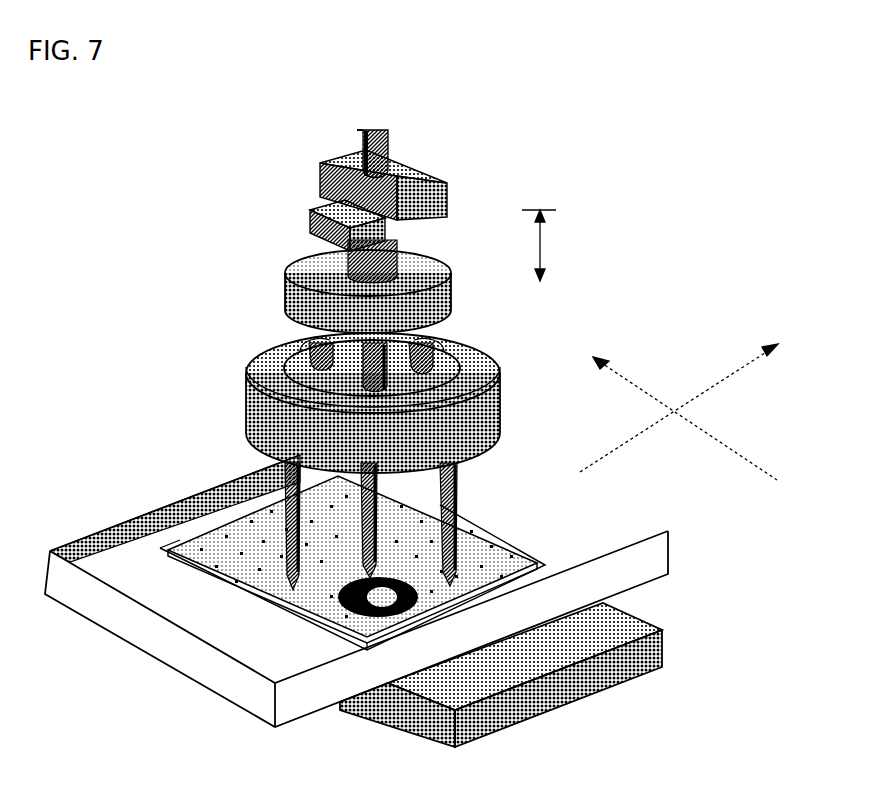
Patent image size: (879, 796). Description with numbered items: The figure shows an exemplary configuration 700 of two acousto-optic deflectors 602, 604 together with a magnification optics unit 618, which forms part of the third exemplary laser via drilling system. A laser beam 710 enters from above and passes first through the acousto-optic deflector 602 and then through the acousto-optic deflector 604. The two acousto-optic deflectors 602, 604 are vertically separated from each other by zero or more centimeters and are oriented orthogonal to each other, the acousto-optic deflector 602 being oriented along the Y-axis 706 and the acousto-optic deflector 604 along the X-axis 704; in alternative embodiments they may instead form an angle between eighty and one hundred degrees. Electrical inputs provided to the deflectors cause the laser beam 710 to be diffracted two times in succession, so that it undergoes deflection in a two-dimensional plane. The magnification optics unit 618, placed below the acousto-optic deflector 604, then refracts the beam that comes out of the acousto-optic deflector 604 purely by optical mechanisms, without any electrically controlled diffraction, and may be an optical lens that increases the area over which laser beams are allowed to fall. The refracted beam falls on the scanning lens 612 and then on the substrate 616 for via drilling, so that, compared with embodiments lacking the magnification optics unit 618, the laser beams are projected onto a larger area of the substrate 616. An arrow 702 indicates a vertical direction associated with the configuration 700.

The exemplary configuration 700 is at (410, 65).
The vertical motion direction 702 is at (541, 254).
The X-axis 704 is at (710, 386).
The Y-axis 706 is at (633, 387).
The laser beam 710 is at (388, 161).
The acousto-optic deflector 602 is at (320, 176).
The acousto-optic deflector 604 is at (312, 214).
The magnification optics unit 618 is at (452, 284).
The scanning lens 612 is at (504, 411).
The substrate 616 is at (499, 556).